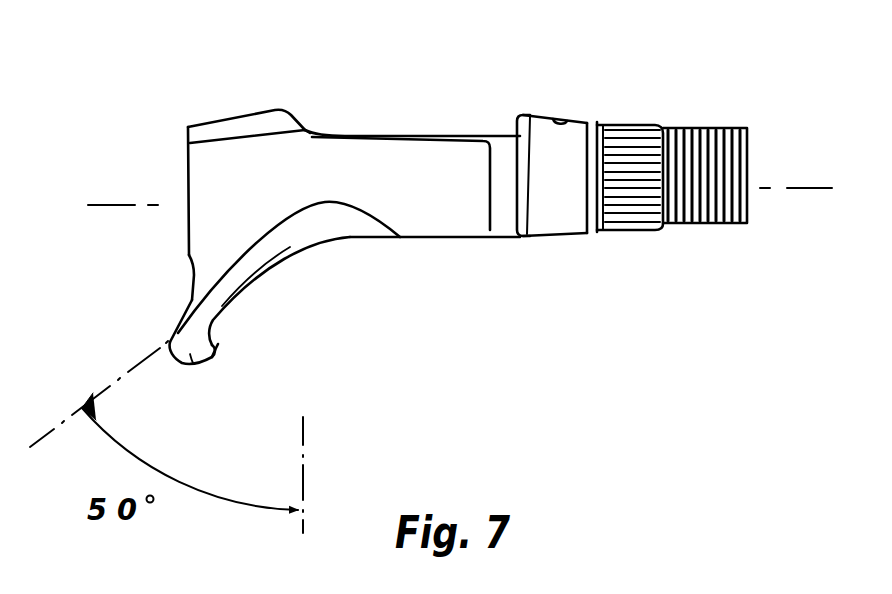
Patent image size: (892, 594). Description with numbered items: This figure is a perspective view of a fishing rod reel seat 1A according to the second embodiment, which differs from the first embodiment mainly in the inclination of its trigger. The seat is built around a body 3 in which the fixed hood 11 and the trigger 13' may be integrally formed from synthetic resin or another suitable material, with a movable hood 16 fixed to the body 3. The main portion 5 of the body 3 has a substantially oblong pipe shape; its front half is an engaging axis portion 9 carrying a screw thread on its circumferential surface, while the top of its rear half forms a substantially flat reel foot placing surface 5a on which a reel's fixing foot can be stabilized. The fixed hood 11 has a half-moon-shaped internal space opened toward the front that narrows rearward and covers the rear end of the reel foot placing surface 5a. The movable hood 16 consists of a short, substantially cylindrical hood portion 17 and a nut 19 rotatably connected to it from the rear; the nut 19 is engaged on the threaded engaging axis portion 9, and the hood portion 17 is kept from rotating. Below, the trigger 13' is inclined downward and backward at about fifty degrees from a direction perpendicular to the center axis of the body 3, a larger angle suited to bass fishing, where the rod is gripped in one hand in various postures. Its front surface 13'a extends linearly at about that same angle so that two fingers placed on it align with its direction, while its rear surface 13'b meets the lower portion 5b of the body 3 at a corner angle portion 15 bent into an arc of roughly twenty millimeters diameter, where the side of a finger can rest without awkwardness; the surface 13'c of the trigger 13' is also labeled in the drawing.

The fishing rod reel seat 1A is at (156, 148).
The body 3 is at (188, 228).
The main portion 5 is at (474, 220).
The reel foot placing surface 5a is at (387, 135).
The lower portion of the body 5b is at (405, 240).
The engaging axis portion 9 is at (697, 223).
The fixed hood 11 is at (250, 123).
The trigger 13' is at (216, 322).
The front surface of the trigger 13'a is at (289, 275).
The rear surface of the trigger 13'b is at (112, 321).
The front surface of hook 13'c is at (274, 376).
The corner angle portion 15 is at (188, 273).
The movable hood 16 is at (682, 29).
The hood portion 17 is at (547, 120).
The nut 19 is at (620, 130).